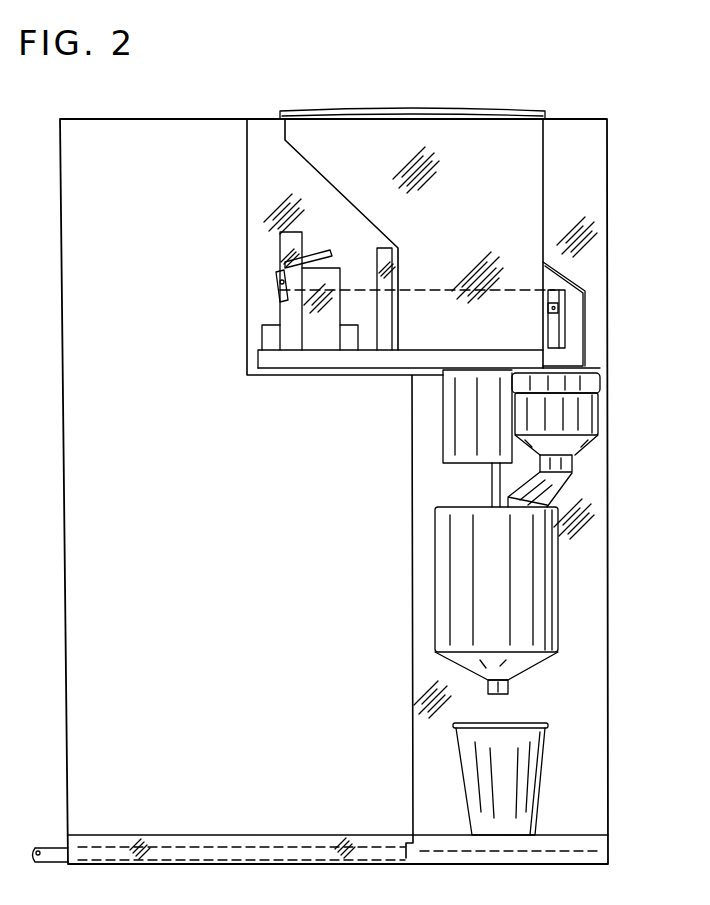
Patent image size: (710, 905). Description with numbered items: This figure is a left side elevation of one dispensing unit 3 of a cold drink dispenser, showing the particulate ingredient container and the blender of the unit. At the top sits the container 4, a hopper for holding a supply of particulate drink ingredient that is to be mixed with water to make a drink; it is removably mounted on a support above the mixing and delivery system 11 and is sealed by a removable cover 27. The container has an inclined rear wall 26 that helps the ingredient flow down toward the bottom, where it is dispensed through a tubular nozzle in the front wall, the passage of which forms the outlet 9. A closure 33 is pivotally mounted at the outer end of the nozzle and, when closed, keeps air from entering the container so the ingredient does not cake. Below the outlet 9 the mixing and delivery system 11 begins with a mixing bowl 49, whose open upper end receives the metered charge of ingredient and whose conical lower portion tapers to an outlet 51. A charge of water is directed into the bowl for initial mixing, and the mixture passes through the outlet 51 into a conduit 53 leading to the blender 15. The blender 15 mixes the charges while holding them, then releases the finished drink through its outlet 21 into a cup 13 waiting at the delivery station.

The dispensing unit 3 is at (466, 101).
The removable cover 27 is at (510, 116).
The container 4 is at (544, 156).
The inclined rear wall 26 is at (327, 182).
The closure 33 is at (568, 322).
The outlet 9 is at (552, 333).
The mixing bowl 49 is at (583, 418).
The outlet 51 is at (575, 462).
The conduit 53 is at (557, 494).
The mixing and delivery system 11 is at (624, 503).
The blender 15 is at (560, 583).
The outlet 21 is at (506, 700).
The cup 13 is at (542, 797).